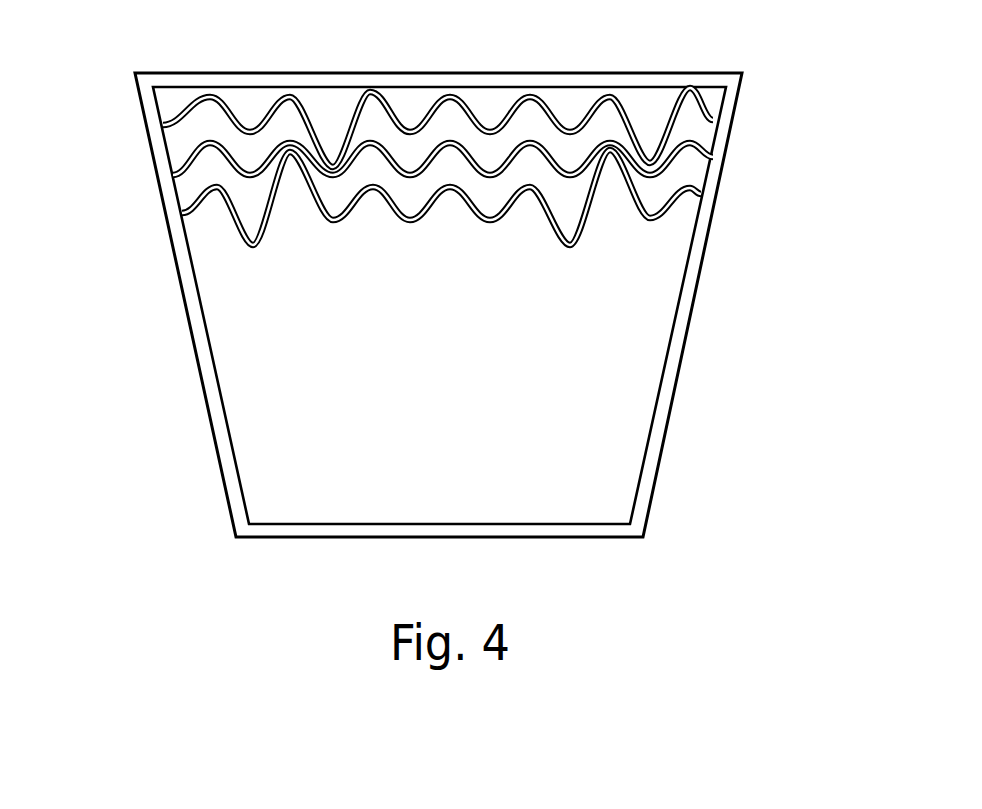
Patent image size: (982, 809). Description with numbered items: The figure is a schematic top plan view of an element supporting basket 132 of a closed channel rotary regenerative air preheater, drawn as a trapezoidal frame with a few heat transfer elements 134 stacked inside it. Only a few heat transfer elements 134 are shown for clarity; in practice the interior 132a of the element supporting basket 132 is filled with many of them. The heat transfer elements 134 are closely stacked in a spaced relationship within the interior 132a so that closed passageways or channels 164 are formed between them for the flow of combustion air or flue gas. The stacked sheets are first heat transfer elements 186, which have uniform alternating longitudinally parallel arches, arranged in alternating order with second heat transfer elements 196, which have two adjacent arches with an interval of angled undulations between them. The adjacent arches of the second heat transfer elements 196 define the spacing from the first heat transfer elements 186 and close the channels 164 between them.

The element supporting basket 132 is at (702, 272).
The interior 132a is at (610, 390).
The heat transfer elements 134 is at (196, 158).
The closed passageways or channels 164 is at (532, 130).
The first heat transfer elements 186 is at (470, 155).
The second heat transfer elements 196 is at (349, 198).